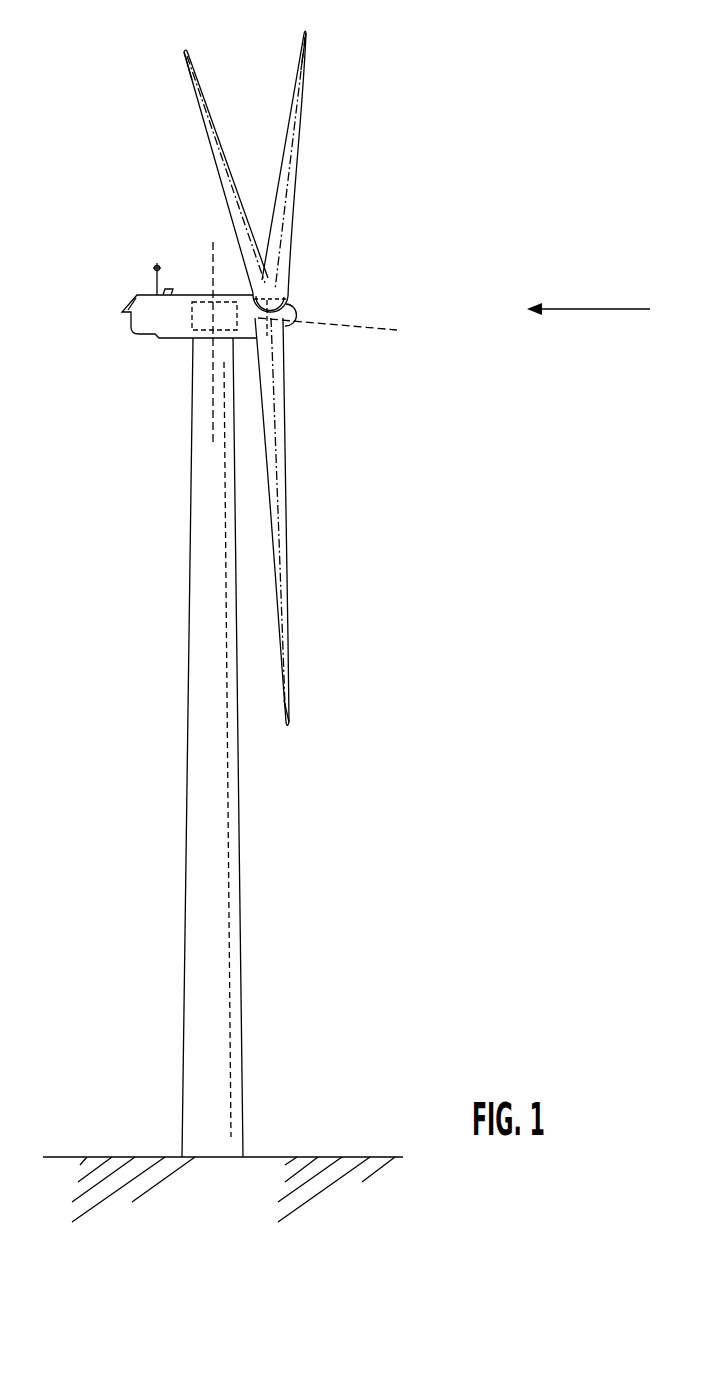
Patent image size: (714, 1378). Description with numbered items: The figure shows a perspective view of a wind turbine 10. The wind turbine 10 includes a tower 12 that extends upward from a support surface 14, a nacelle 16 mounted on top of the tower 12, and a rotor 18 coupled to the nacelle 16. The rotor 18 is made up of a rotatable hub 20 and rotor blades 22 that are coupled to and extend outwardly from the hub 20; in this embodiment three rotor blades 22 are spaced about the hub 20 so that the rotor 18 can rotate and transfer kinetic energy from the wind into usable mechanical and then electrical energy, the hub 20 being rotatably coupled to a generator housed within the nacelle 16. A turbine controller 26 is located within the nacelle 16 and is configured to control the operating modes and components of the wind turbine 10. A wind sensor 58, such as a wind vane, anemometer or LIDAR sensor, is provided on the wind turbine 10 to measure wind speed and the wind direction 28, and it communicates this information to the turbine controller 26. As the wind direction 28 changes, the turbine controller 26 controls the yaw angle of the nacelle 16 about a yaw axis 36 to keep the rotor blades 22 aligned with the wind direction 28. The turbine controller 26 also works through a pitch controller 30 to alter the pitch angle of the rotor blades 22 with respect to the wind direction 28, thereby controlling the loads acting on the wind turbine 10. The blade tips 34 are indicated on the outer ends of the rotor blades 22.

The wind turbine 10 is at (424, 126).
The tower 12 is at (184, 908).
The support surface 14 is at (152, 1157).
The nacelle 16 is at (160, 340).
The rotor 18 is at (318, 267).
The rotatable hub 20 is at (290, 302).
The rotor blade 22 is at (214, 158).
The turbine controller 26 is at (207, 294).
The wind direction 28 is at (610, 309).
The pitch controller 30 is at (342, 334).
The blade tip 34 is at (202, 117).
The yaw axis 36 is at (213, 382).
The wind sensor 58 is at (154, 283).